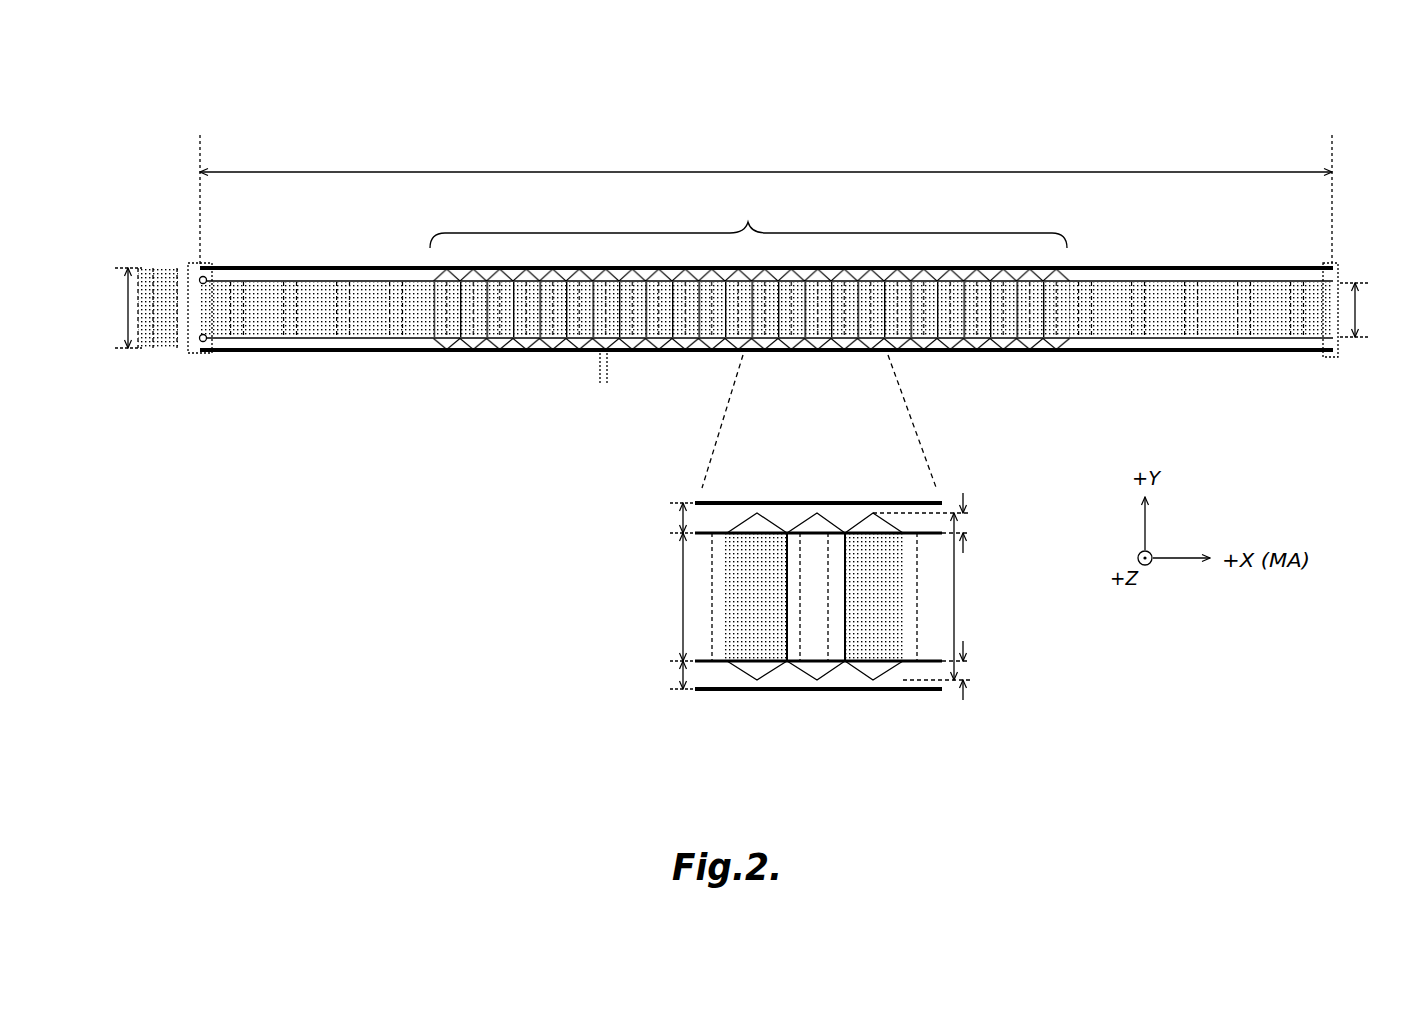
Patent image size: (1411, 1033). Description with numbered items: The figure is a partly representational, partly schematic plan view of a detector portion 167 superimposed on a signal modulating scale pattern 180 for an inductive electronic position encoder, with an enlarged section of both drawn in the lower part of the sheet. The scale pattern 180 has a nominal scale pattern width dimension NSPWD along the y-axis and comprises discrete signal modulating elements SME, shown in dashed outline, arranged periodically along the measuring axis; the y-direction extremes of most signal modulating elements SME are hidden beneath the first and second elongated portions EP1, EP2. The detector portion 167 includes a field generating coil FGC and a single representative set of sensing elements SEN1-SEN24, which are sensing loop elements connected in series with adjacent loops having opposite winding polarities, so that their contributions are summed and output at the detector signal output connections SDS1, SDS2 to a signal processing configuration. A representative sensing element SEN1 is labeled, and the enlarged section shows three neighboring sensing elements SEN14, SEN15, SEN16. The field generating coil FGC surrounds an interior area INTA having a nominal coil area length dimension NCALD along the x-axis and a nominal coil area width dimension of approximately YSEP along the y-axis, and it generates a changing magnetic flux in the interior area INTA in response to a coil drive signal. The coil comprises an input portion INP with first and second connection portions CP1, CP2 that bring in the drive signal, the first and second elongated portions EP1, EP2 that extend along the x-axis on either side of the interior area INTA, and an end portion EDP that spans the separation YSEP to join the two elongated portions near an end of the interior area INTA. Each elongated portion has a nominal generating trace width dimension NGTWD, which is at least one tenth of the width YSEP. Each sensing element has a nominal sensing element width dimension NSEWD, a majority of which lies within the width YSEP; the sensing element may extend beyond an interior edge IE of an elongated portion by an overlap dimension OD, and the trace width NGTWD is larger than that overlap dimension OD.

The detector portion 167 is at (766, 226).
The signal modulating scale pattern 180 is at (122, 307).
The nominal coil area length dimension NCALD is at (785, 171).
The sensing elements SEN1-SEN24 is at (748, 220).
The nominal scale pattern width dimension NSPWD is at (128, 268).
The signal modulating elements SME is at (160, 340).
The input portion INP is at (202, 355).
The first connection portion CP1 is at (206, 278).
The second connection portion CP2 is at (206, 340).
The first elongated portion EP1 is at (1090, 268).
The second elongated portion EP2 is at (1108, 352).
The sensing element SEN1 is at (445, 353).
The detector signal output connection SDS1 is at (599, 384).
The detector signal output connection SDS2 is at (607, 384).
The interior area INTA is at (1234, 291).
The nominal coil area width dimension YSEP is at (1355, 283).
The field generating coil FGC is at (1270, 354).
The end portion EDP is at (1333, 357).
The sensing element SEN14 is at (760, 678).
The sensing element SEN15 is at (825, 678).
The sensing element SEN16 is at (890, 678).
The interior edge IE is at (931, 545).
The nominal generating trace width dimension NGTWD is at (683, 519).
The overlap dimension OD is at (964, 518).
The nominal sensing element width dimension NSEWD is at (955, 594).